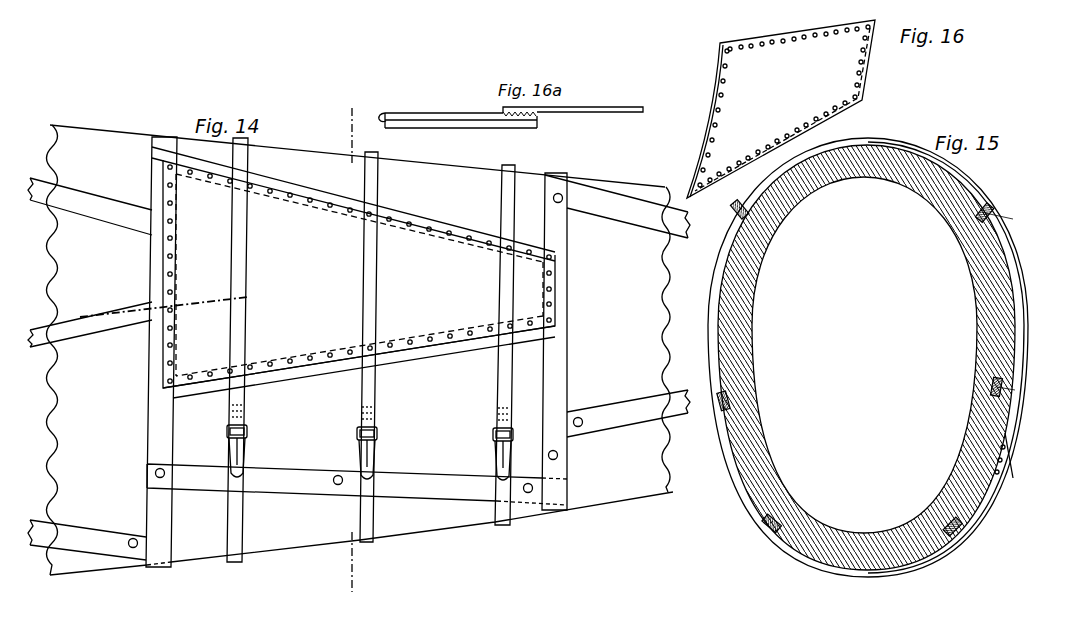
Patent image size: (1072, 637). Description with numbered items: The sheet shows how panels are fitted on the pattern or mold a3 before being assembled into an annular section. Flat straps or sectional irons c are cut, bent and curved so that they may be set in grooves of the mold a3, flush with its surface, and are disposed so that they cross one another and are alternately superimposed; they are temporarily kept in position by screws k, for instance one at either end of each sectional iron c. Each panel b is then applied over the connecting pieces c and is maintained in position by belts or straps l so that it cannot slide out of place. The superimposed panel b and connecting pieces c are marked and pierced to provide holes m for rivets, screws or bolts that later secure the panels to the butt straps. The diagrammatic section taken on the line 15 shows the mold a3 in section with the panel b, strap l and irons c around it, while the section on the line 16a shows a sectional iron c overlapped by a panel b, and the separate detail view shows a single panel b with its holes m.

In FIG. 14, the mold a3 is at (208, 534).
In FIG. 15, the mold a3 is at (735, 328).
In FIG. 14, the panel b is at (353, 272).
In FIG. 16A, the panel b is at (598, 112).
In FIG. 16, the panel b is at (830, 80).
In FIG. 15, the panel b is at (1022, 323).
In FIG. 14, the sectional iron c is at (88, 338).
In FIG. 16A, the sectional iron c is at (503, 112).
In FIG. 15, the sectional iron c is at (995, 388).
In FIG. 14, the screw k is at (155, 474).
In FIG. 14, the belt or strap l is at (370, 272).
In FIG. 15, the belt or strap l is at (1022, 364).
In FIG. 14, the hole m is at (450, 236).
In FIG. 16, the hole m is at (728, 112).
In FIG. 15, the hole m is at (985, 213).
In FIG. 14, the section line 15— 15 is at (363, 350).
In FIG. 14, the section line 16a— 16a is at (162, 303).